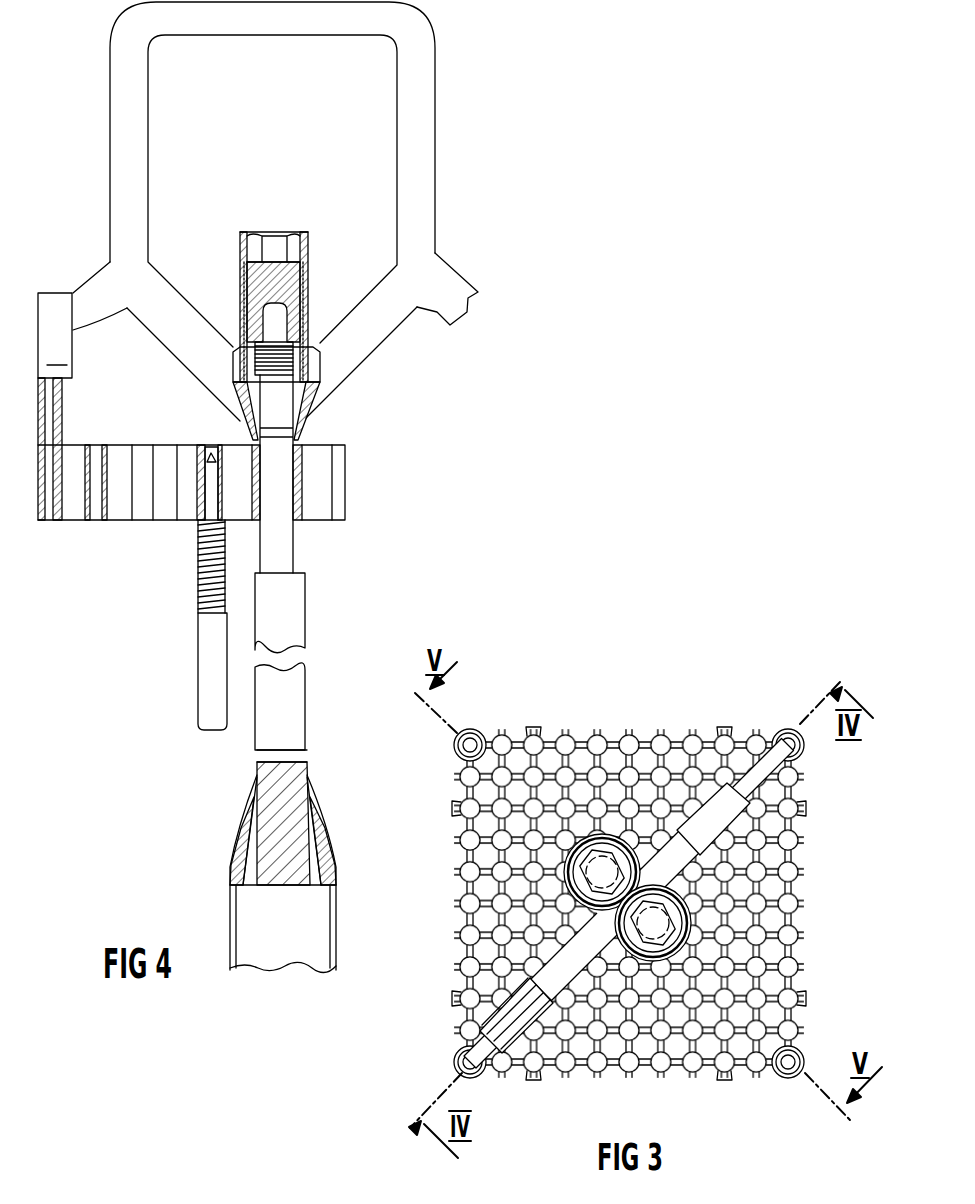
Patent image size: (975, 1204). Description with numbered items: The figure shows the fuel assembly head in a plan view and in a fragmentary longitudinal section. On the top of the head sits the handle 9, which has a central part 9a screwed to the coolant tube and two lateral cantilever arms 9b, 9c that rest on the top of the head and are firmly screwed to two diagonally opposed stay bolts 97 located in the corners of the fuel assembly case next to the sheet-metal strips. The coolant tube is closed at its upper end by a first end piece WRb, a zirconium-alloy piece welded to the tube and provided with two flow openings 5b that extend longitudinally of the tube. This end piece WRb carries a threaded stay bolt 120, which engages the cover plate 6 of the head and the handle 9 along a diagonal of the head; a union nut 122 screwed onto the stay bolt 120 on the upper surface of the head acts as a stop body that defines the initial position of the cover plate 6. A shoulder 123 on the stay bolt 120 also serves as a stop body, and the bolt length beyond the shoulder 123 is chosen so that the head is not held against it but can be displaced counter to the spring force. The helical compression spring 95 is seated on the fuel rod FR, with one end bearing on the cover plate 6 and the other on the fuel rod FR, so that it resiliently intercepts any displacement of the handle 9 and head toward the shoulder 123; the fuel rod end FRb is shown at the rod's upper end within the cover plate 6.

In FIG. 4, the handle 9 is at (418, 67).
In FIG. 4, the central part 9a is at (313, 343).
In FIG. 4, the lateral cantilever arm 9b is at (92, 289).
In FIG. 3, the lateral cantilever arm 9b is at (497, 1053).
In FIG. 4, the lateral cantilever arm 9c is at (455, 291).
In FIG. 3, the lateral cantilever arm 9c is at (730, 797).
In FIG. 4, the stay bolt 97 is at (63, 398).
In FIG. 4, the cover plate 6 is at (337, 482).
In FIG. 3, the cover plate 6 is at (792, 878).
In FIG. 4, the fuel rod bottom end plug FRb is at (200, 470).
In FIG. 4, the helical spring 95 is at (200, 557).
In FIG. 4, the fuel rod FR is at (210, 661).
In FIG. 4, the shoulder 123 is at (303, 573).
In FIG. 4, the stay bolt 120 is at (295, 688).
In FIG. 4, the first end piece WRb is at (292, 778).
In FIG. 4, the flow opening 5b is at (250, 815).
In FIG. 3, the union nut 122 is at (645, 925).